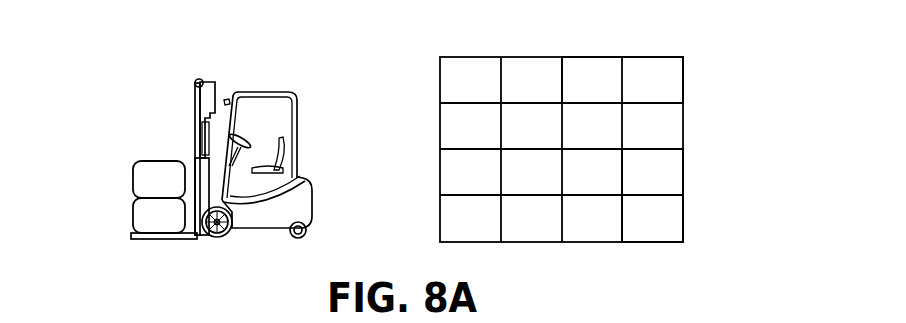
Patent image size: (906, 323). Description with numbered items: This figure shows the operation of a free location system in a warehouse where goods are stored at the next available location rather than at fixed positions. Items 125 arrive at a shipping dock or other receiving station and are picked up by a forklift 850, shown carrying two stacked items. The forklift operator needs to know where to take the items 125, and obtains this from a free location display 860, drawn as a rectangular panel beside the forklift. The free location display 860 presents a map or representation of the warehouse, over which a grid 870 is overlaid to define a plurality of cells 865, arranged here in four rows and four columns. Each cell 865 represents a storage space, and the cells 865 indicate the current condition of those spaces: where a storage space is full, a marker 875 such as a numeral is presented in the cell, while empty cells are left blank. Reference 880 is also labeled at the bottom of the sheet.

The packages / items carried by forklift 125 is at (120, 155).
The forklift 850 is at (234, 249).
The grid / occupancy map 860 is at (438, 111).
The empty grid cells 865 is at (647, 70).
The grid cell 870 is at (623, 175).
The grid cell with value 2 875 is at (676, 218).
The label 880 is at (611, 316).